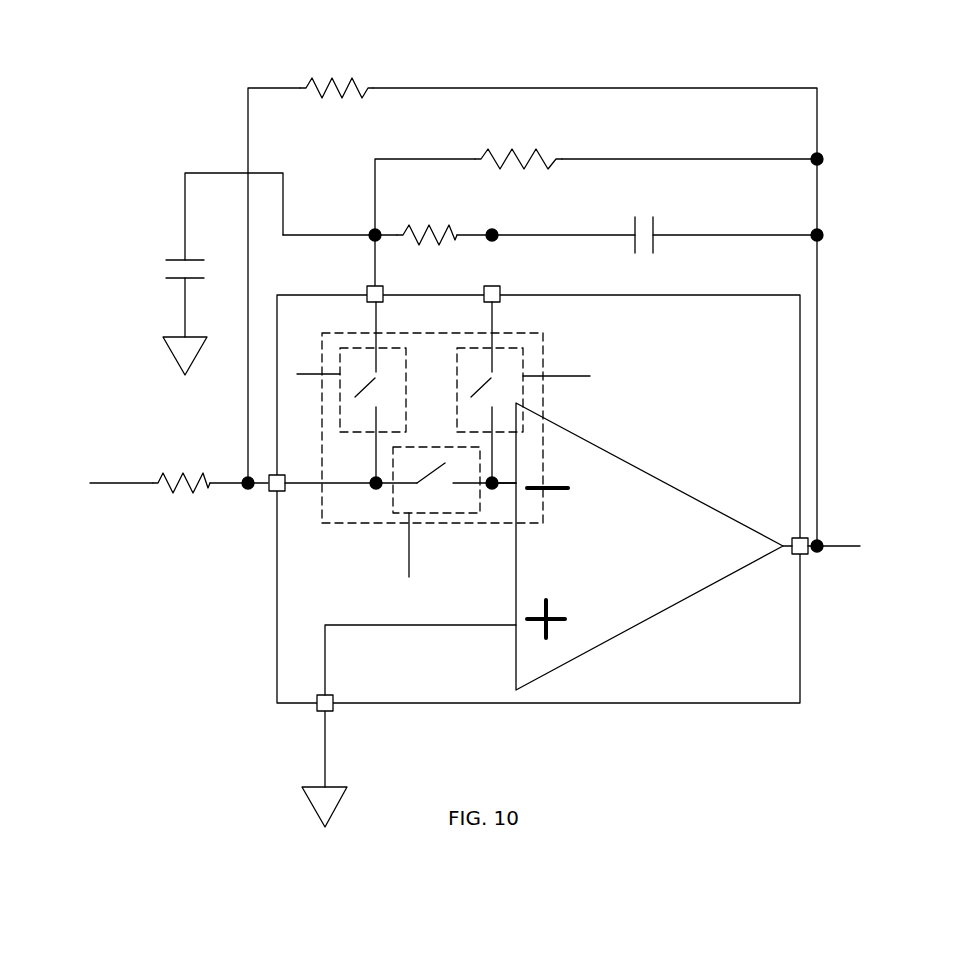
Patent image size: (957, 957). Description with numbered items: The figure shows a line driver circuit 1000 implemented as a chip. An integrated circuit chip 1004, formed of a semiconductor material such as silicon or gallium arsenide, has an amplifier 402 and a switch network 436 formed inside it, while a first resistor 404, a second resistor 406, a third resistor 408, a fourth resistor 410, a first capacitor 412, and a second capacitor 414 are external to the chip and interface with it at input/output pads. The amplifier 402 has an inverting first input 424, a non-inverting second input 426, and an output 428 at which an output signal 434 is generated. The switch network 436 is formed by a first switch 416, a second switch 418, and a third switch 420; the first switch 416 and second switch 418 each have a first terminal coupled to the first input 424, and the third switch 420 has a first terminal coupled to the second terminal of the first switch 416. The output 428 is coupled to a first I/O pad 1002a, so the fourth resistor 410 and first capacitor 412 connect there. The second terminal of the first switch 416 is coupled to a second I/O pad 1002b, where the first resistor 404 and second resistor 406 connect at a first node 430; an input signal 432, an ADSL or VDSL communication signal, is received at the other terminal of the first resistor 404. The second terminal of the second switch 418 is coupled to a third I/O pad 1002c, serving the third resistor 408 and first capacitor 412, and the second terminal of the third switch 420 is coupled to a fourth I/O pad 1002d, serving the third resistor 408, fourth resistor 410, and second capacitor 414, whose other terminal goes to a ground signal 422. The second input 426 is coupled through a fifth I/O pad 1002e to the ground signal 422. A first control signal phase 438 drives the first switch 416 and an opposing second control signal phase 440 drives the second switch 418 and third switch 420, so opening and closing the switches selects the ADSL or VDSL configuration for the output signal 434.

The line driver circuit 1000 is at (154, 18).
The amplifier 402 is at (617, 452).
The first resistor 404 is at (167, 472).
The second resistor 406 is at (315, 80).
The third resistor 408 is at (452, 230).
The fourth resistor 410 is at (503, 152).
The first capacitor 412 is at (635, 220).
The second capacitor 414 is at (177, 262).
The first switch 416 is at (433, 514).
The second switch 418 is at (478, 347).
The third switch 420 is at (348, 343).
The ground signal 422 is at (168, 338).
The first input 424 is at (512, 480).
The second input 426 is at (516, 618).
The output 428 is at (783, 543).
The first node 430 is at (242, 475).
The input signal 432 is at (97, 480).
The output signal 434 is at (838, 542).
The switch network 436 is at (512, 335).
The first control signal phase 438 is at (409, 570).
The second control signal phase 440 is at (312, 373).
The first I/O pad 1002a is at (808, 557).
The second I/O pad 1002b is at (268, 490).
The third I/O pad 1002c is at (497, 290).
The fourth I/O pad 1002d is at (380, 290).
The fifth I/O pad 1002e is at (333, 697).
The integrated circuit chip 1004 is at (683, 295).